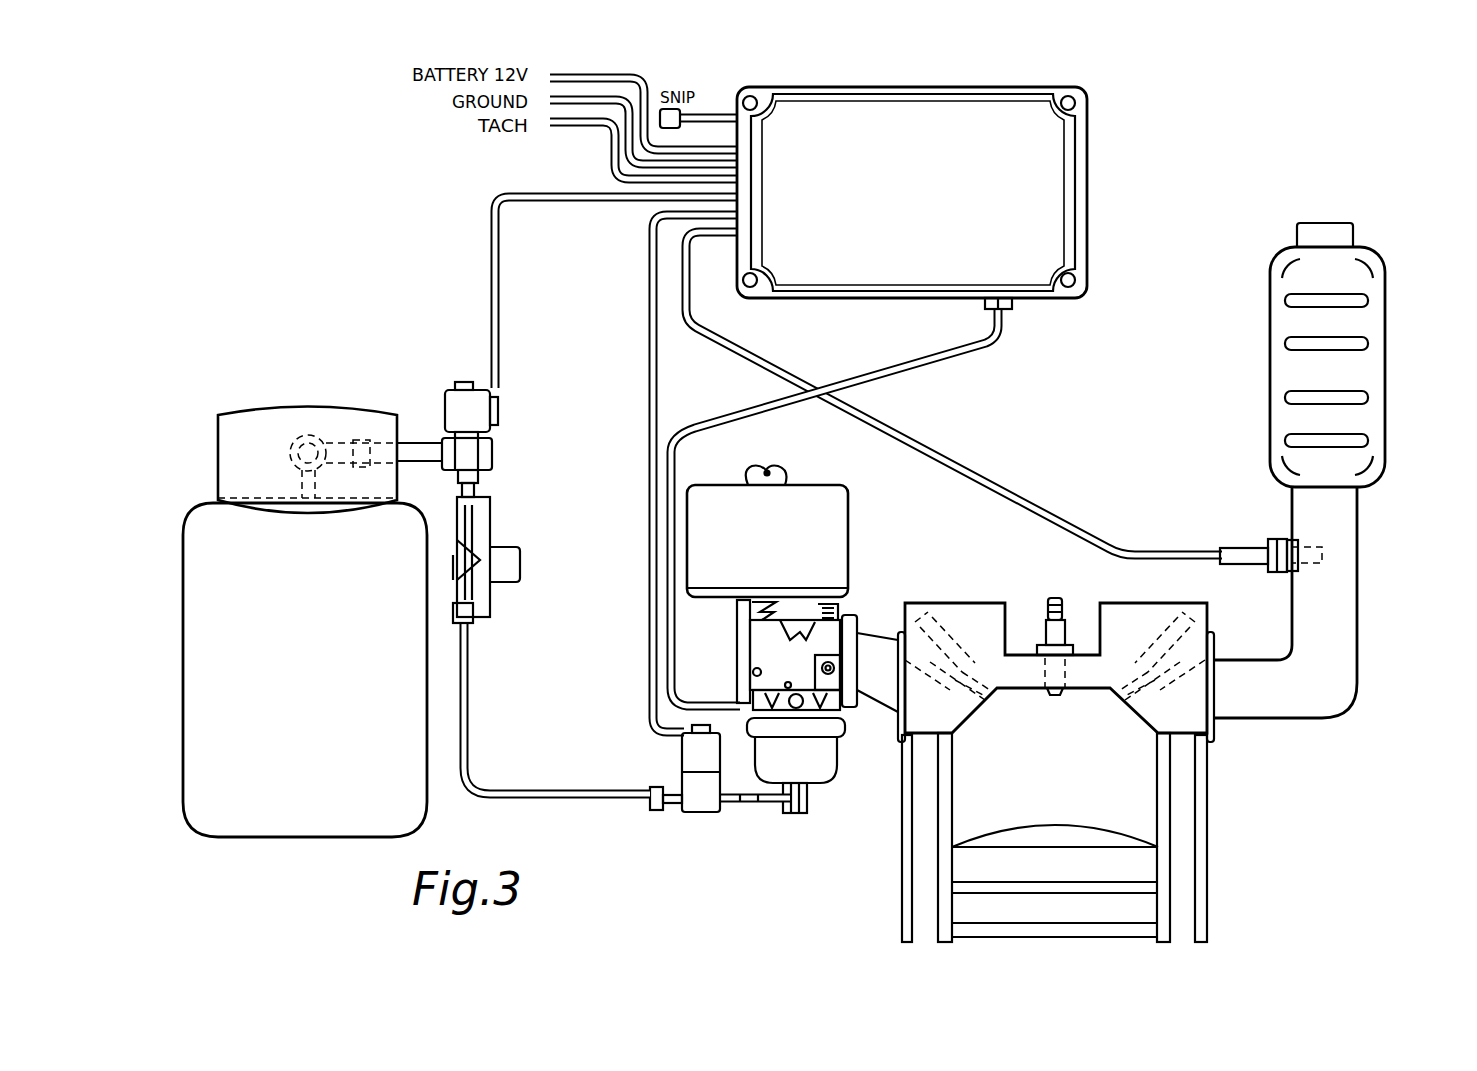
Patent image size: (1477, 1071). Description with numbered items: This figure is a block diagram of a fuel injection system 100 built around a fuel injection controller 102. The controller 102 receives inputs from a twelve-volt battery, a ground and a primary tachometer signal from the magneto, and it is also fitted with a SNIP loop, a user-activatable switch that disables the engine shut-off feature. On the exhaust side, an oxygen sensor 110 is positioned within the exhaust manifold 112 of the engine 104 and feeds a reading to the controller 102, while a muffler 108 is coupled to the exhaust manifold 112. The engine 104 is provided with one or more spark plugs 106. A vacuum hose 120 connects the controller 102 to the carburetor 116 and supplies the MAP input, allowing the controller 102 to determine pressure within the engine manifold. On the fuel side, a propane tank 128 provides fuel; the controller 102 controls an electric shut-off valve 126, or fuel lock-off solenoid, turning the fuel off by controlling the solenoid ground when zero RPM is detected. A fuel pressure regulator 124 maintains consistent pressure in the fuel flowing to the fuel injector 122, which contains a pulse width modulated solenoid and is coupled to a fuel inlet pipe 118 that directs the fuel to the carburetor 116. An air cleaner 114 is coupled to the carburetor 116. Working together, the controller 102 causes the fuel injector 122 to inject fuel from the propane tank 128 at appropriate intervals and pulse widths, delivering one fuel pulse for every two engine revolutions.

The fuel injection system 100 is at (322, 180).
The fuel injection controller 102 is at (1087, 150).
The engine 104 is at (1143, 602).
The spark plug 106 is at (1067, 608).
The muffler 108 is at (1383, 320).
The oxygen sensor 110 is at (1270, 574).
The exhaust manifold 112 is at (1357, 657).
The air cleaner 114 is at (848, 520).
The carburetor 116 is at (852, 708).
The fuel inlet pipe 118 is at (780, 820).
The vacuum hose 120 is at (828, 372).
The fuel injector 122 is at (668, 765).
The fuel pressure regulator 124 is at (528, 583).
The electric shut-off valve 126 is at (503, 412).
The propane tank 128 is at (202, 487).